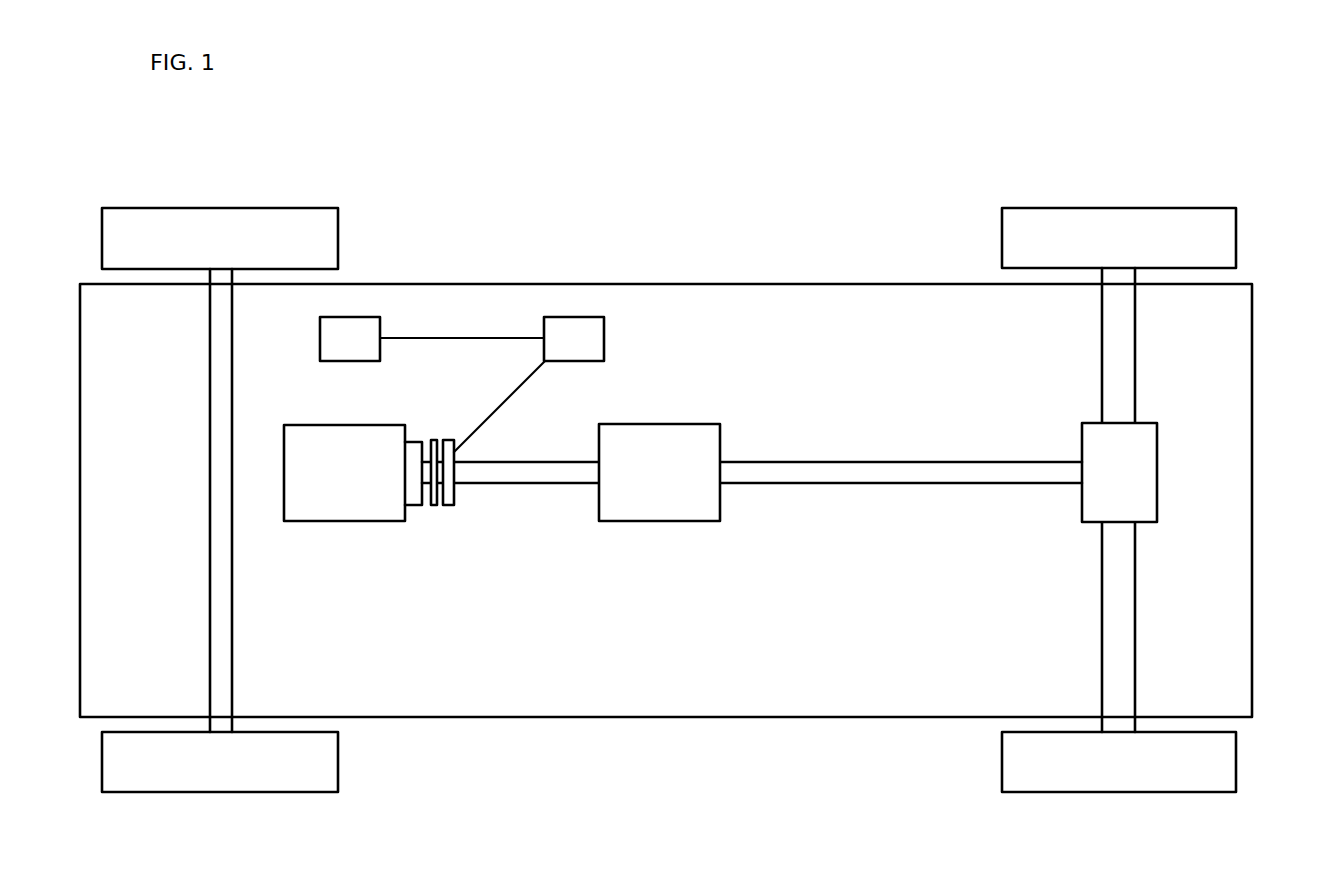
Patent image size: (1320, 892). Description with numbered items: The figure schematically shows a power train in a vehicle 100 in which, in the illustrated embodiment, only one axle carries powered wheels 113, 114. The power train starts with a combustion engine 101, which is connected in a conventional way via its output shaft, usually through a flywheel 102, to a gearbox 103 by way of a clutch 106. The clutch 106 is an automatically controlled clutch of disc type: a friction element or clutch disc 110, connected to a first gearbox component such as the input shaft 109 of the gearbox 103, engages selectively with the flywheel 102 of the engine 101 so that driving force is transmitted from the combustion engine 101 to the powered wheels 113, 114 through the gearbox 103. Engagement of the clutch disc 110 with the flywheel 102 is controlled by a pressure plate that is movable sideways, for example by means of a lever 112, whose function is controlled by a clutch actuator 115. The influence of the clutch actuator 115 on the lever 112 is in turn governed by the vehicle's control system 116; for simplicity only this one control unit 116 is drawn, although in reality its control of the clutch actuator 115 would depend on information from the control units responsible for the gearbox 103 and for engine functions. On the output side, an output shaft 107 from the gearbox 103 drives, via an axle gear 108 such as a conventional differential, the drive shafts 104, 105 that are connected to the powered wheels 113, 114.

The vehicle 100 is at (566, 110).
The combustion engine 101 is at (318, 512).
The flywheel 102 is at (414, 456).
The gearbox 103 is at (662, 436).
The drive shaft 104 is at (1124, 344).
The drive shaft 105 is at (1127, 636).
The clutch 106 is at (449, 511).
The output shaft 107 is at (1000, 478).
The axle gear 108 is at (1150, 470).
The input shaft 109 is at (568, 476).
The friction element (disc) 110 is at (433, 506).
The lever 112 is at (517, 382).
The powered wheel 113 is at (1232, 230).
The powered wheel 114 is at (1232, 765).
The clutch actuator 115 is at (603, 332).
The control system 116 is at (335, 355).